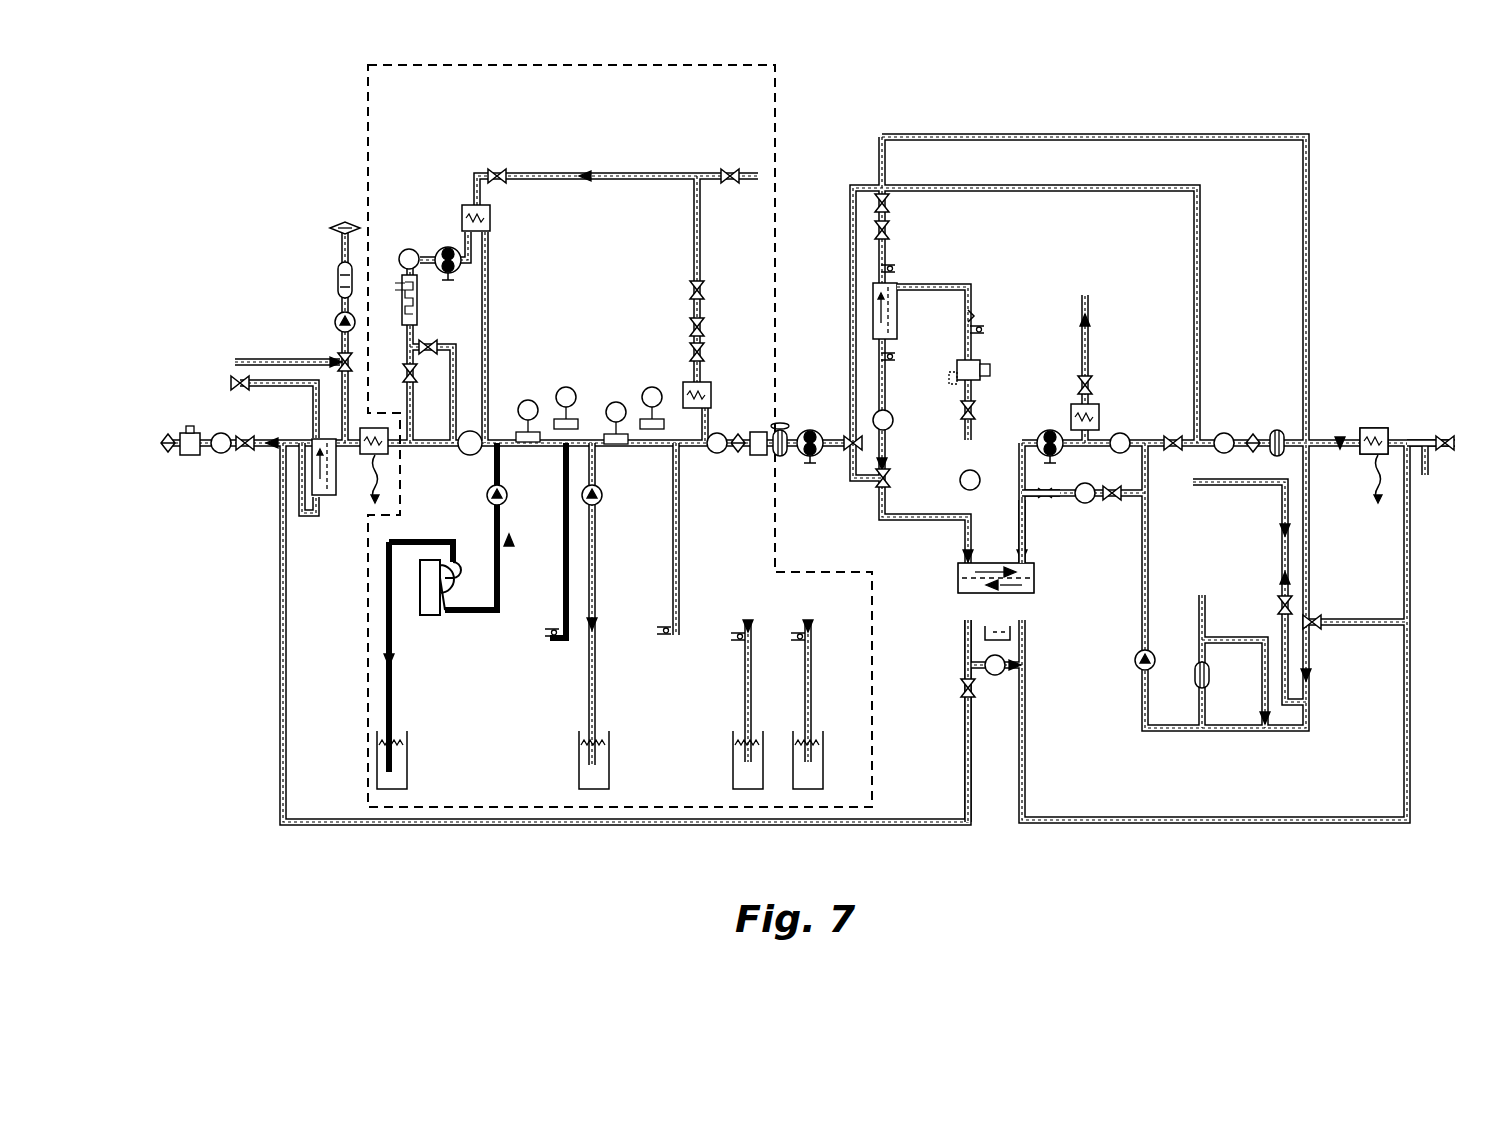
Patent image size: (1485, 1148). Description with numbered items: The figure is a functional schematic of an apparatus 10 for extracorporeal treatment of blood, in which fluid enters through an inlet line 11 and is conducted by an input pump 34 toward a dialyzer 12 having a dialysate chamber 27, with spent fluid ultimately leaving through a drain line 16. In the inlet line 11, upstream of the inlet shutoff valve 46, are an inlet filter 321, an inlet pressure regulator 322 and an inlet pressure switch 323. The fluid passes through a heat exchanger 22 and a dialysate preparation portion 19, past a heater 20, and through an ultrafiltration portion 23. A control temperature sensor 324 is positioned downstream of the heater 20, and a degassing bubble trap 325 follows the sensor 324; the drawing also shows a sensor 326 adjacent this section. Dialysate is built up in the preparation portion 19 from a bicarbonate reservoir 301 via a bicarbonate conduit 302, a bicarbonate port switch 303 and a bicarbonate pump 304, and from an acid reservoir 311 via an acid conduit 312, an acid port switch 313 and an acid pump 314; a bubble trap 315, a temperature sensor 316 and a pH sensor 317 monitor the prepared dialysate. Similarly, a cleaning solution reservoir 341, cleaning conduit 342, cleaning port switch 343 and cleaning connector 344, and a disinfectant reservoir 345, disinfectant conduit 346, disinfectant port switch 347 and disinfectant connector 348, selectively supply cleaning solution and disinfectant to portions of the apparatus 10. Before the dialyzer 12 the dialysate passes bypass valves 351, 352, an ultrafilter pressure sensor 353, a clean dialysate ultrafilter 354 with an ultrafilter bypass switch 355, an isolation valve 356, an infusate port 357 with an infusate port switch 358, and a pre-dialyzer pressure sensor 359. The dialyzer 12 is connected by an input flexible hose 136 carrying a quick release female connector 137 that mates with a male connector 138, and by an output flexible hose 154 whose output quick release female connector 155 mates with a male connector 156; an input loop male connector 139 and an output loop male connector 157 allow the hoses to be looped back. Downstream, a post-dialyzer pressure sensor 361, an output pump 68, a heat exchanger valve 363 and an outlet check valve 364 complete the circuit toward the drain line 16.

The apparatus 10 is at (1356, 224).
The inlet line 11 is at (192, 456).
The dialyzer 12 is at (958, 596).
The drain line 16 is at (1447, 432).
The dialysate preparation portion 19 is at (366, 136).
The heater 20 is at (417, 300).
The heat exchanger 22 is at (330, 497).
The ultrafiltration portion 23 is at (780, 428).
The dialysate chamber 27 is at (1036, 592).
The input pump 34 is at (810, 430).
The inlet shutoff valve 46 is at (300, 482).
The output pump 68 is at (1040, 438).
The input flexible hose 136 is at (966, 532).
The quick release female connector 137 is at (964, 558).
The male connector 138 is at (958, 580).
The input loop male connector 139 is at (966, 660).
The output flexible hose 154 is at (1026, 506).
The output quick release female connector 155 is at (1028, 548).
The male connector 156 is at (1036, 576).
The output loop male connector 157 is at (1026, 662).
The bicarbonate reservoir 301 is at (408, 767).
The bicarbonate conduit 302 is at (394, 702).
The bicarbonate port switch 303 is at (548, 636).
The bicarbonate pump 304 is at (488, 486).
The acid reservoir 311 is at (578, 758).
The acid conduit 312 is at (590, 676).
The acid port switch 313 is at (658, 632).
The acid pump 314 is at (603, 498).
The bubble trap 315 is at (690, 394).
The temperature sensor 316 is at (735, 458).
The pH sensor 317 is at (758, 458).
The inlet filter 321 is at (170, 432).
The inlet pressure regulator 322 is at (222, 455).
The inlet pressure switch 323 is at (247, 433).
The control temperature sensor 324 is at (409, 247).
The degassing bubble trap 325 is at (490, 222).
The pressure gauge 326 is at (473, 430).
The cleaning solution reservoir 341 is at (733, 777).
The cleaning conduit 342 is at (745, 706).
The cleaning port switch 343 is at (740, 648).
The cleaning connector 344 is at (744, 628).
The disinfectant reservoir 345 is at (813, 760).
The disinfectant conduit 346 is at (811, 690).
The disinfectant port switch 347 is at (800, 644).
The disinfectant connector 348 is at (806, 626).
The bypass valve 351 is at (853, 455).
The bypass valve 352 is at (892, 478).
The ultrafilter pressure sensor 353 is at (893, 422).
The clean dialysate ultrafilter 354 is at (898, 313).
The ultrafilter bypass switch 355 is at (893, 357).
The isolation valve 356 is at (982, 370).
The infusate port 357 is at (972, 287).
The infusate port switch 358 is at (982, 322).
The pre-dialyzer pressure sensor 359 is at (980, 460).
The post-dialyzer pressure sensor 361 is at (1085, 484).
The heat exchanger valve 363 is at (1316, 616).
The outlet check valve 364 is at (1345, 436).